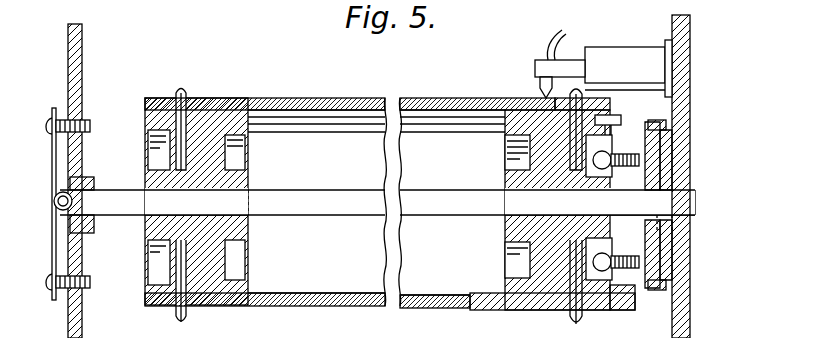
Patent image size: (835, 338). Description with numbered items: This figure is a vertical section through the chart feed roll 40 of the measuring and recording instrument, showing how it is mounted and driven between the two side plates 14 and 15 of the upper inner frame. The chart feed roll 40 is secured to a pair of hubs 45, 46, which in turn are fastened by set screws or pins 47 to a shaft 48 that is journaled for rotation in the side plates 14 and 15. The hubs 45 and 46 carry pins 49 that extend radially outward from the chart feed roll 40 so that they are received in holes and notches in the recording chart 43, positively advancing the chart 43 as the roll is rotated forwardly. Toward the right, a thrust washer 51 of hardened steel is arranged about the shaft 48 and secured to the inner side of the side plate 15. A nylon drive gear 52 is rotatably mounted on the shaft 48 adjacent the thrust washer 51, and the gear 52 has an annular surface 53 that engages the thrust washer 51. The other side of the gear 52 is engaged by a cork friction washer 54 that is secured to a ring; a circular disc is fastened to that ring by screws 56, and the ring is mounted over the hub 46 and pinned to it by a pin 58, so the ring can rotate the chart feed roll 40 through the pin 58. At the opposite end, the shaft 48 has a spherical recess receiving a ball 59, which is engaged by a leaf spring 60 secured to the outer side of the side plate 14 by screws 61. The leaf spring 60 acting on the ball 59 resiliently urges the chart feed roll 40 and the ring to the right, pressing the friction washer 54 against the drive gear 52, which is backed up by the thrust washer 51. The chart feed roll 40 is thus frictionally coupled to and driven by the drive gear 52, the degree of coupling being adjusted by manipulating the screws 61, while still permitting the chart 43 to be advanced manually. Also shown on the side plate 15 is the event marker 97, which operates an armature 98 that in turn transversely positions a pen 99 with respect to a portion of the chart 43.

The side plate 14 is at (83, 35).
The side plate 15 is at (692, 26).
The chart feed roll 40 is at (370, 100).
The recording chart 43 is at (298, 100).
The hub 45 is at (212, 130).
The hub 46 is at (530, 272).
The set screws or pins 47 is at (155, 200).
The shaft 48 is at (352, 196).
The pins 49 is at (180, 92).
The thrust washer 51 is at (668, 227).
The drive gear 52 is at (660, 282).
The annular surface 53 is at (660, 250).
The friction washer 54 is at (625, 270).
The screws 56 is at (600, 160).
The pin 58 is at (602, 114).
The ball 59 is at (56, 197).
The leaf spring 60 is at (52, 148).
The screws 61 is at (46, 122).
The event marker 97 is at (615, 47).
The armature 98 is at (568, 58).
The pen 99 is at (540, 84).